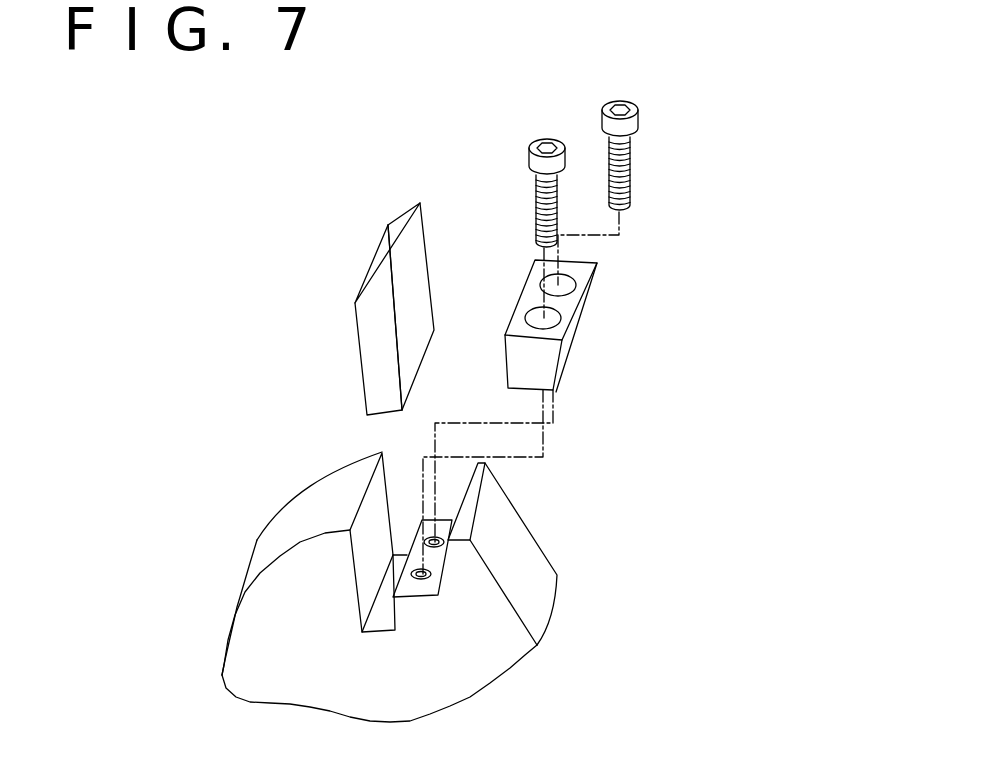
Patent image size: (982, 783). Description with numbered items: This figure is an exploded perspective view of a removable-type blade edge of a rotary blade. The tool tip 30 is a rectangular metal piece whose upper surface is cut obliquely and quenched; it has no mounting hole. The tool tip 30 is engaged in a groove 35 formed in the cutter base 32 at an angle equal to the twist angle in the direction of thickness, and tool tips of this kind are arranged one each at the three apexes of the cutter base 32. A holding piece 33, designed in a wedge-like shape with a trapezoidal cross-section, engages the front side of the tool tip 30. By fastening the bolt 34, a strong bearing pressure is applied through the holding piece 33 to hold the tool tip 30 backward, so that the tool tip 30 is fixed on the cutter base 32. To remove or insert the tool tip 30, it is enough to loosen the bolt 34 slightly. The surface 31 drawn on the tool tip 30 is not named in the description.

The tool tip 30 is at (362, 368).
The reflecting surface of prism 31 is at (402, 245).
The cutter base 32 is at (523, 566).
The holding piece 33 is at (575, 327).
The bolt 34 is at (537, 138).
The groove 35 is at (382, 618).